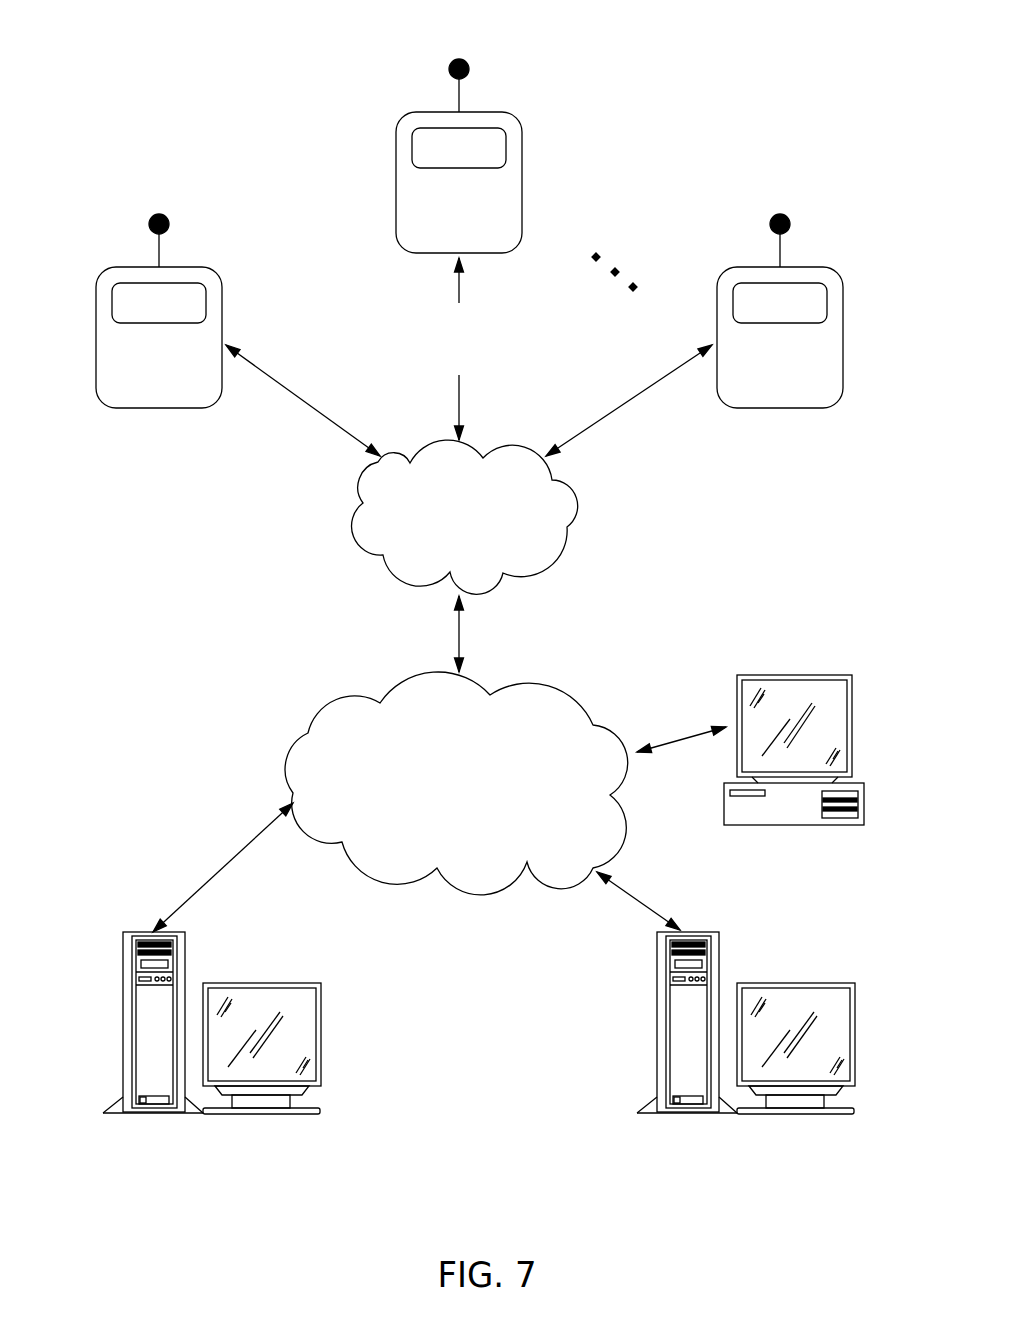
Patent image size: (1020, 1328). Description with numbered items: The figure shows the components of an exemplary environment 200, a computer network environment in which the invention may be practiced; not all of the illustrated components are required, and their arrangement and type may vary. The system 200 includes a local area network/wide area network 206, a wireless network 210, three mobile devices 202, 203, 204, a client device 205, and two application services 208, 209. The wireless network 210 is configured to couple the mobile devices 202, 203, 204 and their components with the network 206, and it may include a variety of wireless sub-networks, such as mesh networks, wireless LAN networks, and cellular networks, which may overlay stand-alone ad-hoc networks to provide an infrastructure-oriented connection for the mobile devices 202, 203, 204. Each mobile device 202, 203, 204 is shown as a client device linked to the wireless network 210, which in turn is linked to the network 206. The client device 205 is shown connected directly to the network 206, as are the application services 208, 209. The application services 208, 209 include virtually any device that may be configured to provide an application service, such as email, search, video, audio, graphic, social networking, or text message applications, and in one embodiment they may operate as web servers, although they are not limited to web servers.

The environment 200 is at (645, 79).
The mobile device 202 is at (97, 333).
The mobile device 203 is at (397, 178).
The mobile device 204 is at (843, 333).
The client device 205 is at (793, 675).
The local area network/wide area network 206 is at (308, 727).
The application service 208 is at (258, 983).
The application service 209 is at (793, 984).
The wireless network 210 is at (352, 524).